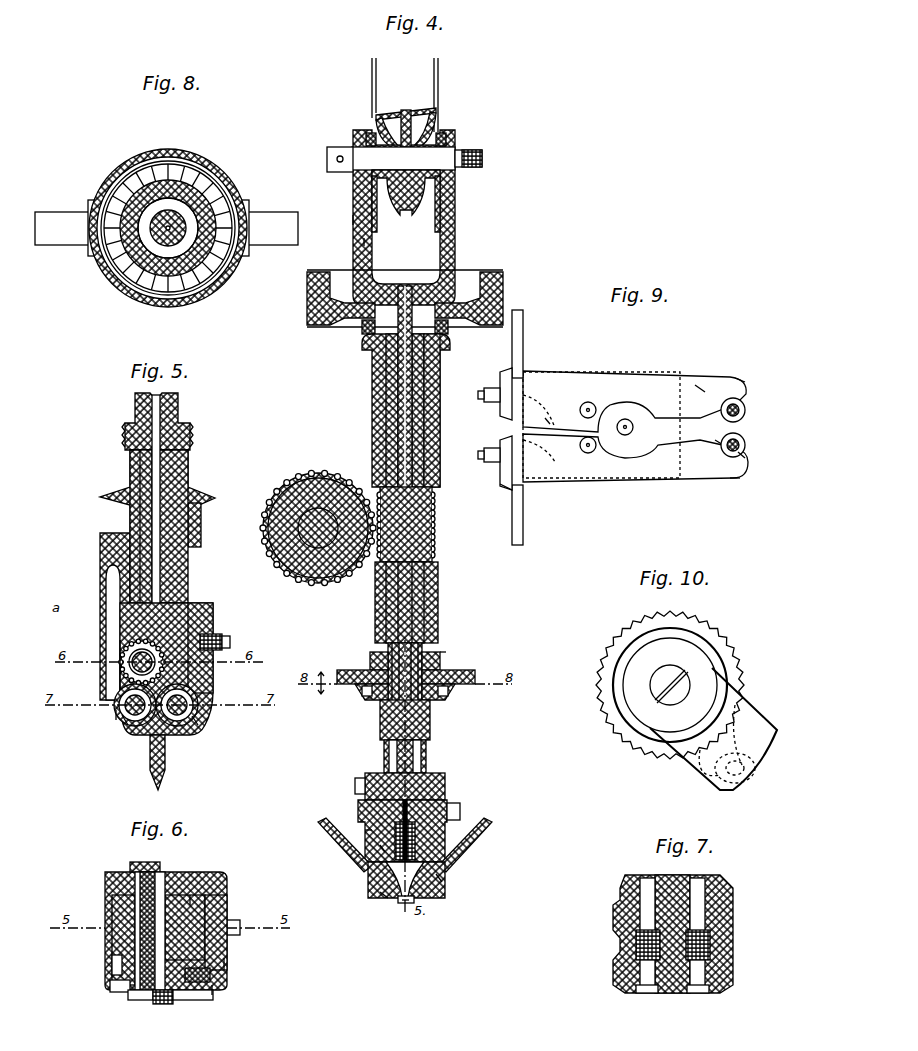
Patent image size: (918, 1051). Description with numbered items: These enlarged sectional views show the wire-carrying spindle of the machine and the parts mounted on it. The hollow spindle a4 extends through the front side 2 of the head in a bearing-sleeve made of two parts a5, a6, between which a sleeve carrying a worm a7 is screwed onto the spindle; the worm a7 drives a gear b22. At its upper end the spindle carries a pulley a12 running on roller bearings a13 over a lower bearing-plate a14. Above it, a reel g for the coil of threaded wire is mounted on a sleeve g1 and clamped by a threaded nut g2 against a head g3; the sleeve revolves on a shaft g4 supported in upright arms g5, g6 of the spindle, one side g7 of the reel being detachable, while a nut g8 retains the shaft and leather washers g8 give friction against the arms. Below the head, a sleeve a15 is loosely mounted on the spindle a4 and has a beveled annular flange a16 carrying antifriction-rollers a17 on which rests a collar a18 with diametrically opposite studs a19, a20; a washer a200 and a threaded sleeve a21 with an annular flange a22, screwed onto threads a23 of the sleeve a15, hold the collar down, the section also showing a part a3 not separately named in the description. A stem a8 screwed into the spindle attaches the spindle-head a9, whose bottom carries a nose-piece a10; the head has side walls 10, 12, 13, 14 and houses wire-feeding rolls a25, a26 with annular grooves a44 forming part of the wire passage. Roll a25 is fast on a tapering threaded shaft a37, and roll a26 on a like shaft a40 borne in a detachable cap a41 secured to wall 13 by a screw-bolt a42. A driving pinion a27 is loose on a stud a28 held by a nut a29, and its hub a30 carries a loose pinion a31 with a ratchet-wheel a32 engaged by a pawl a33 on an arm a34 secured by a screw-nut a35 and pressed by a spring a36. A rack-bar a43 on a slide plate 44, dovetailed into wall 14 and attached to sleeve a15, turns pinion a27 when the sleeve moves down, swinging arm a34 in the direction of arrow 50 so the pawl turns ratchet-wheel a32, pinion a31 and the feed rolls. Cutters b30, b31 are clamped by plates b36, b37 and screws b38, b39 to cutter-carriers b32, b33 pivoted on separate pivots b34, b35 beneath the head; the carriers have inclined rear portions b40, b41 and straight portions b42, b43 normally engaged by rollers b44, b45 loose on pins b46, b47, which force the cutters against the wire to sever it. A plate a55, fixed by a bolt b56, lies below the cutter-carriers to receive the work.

In FIG. 4, the cup g is at (408, 112).
In FIG. 4, the central column g1 is at (408, 132).
In FIG. 4, the boss g2 is at (370, 138).
In FIG. 4, the boss g3 is at (440, 136).
In FIG. 4, the cross bar g4 is at (365, 163).
In FIG. 4, the inner body g5 is at (440, 212).
In FIG. 4, the outer body g6 is at (354, 222).
In FIG. 4, the outer body wall g7 is at (366, 242).
In FIG. 4, the pin g8 is at (366, 138).
In FIG. 4, the flange a12 is at (500, 296).
In FIG. 4, the bushing a13 is at (364, 330).
In FIG. 4, the bushing a14 is at (447, 330).
In FIG. 4, the shaft casing 2 is at (440, 406).
In FIG. 4, the inner sleeve a4 is at (386, 428).
In FIG. 8, the inner sleeve a4 is at (190, 216).
In FIG. 4, the outer sleeve a5 is at (428, 442).
In FIG. 4, the threaded section a7 is at (434, 512).
In FIG. 4, the lower sleeve a6 is at (438, 597).
In FIG. 4, the gear b22 is at (326, 478).
In FIG. 4, the bushing a22 is at (372, 662).
In FIG. 4, the bushing a21 is at (438, 660).
In FIG. 4, the bushing part a200 is at (445, 655).
In FIG. 4, the flange plate a19 is at (470, 676).
In FIG. 8, the flange plate a19 is at (276, 214).
In FIG. 4, the flange plate a20 is at (338, 676).
In FIG. 8, the flange plate a20 is at (68, 214).
In FIG. 4, the hub a17 is at (448, 694).
In FIG. 8, the hub a17 is at (180, 162).
In FIG. 4, the hub a18 is at (365, 694).
In FIG. 8, the hub a18 is at (122, 176).
In FIG. 4, the collar a16 is at (370, 700).
In FIG. 5, the collar a16 is at (200, 494).
In FIG. 4, the hub body a15 is at (382, 724).
In FIG. 5, the hub body a15 is at (192, 527).
In FIG. 4, the rod a44 is at (389, 754).
In FIG. 7, the rod a44 is at (640, 932).
In FIG. 4, the rod a8 is at (418, 752).
In FIG. 5, the rod a8 is at (170, 540).
In FIG. 4, the block a9 is at (445, 778).
In FIG. 4, the tab a35 is at (356, 786).
In FIG. 6, the tab a35 is at (138, 1002).
In FIG. 4, the block a34 is at (360, 815).
In FIG. 6, the block a34 is at (170, 1005).
In FIG. 10, the block a34 is at (718, 672).
In FIG. 4, the roller a27 is at (420, 812).
In FIG. 5, the roller a27 is at (116, 688).
In FIG. 6, the roller a27 is at (195, 900).
In FIG. 4, the screw a29 is at (460, 812).
In FIG. 6, the screw a29 is at (133, 868).
In FIG. 4, the arm b31 is at (322, 826).
In FIG. 9, the arm b31 is at (525, 330).
In FIG. 4, the arm b30 is at (486, 826).
In FIG. 9, the arm b30 is at (525, 530).
In FIG. 4, the ratchet wheel a32 is at (372, 835).
In FIG. 6, the ratchet wheel a32 is at (115, 985).
In FIG. 10, the ratchet wheel a32 is at (598, 680).
In FIG. 4, the member a37 is at (385, 850).
In FIG. 5, the member a37 is at (118, 715).
In FIG. 7, the member a37 is at (640, 985).
In FIG. 4, the member a25 is at (368, 878).
In FIG. 5, the member a25 is at (126, 720).
In FIG. 7, the member a25 is at (640, 956).
In FIG. 4, the fitting b38 is at (440, 878).
In FIG. 9, the fitting b38 is at (486, 452).
In FIG. 4, the plate a55 is at (415, 900).
In FIG. 9, the plate a55 is at (548, 420).
In FIG. 4, the nut b39 is at (385, 897).
In FIG. 9, the nut b39 is at (486, 392).
In FIG. 4, the nozzle a10 is at (404, 902).
In FIG. 5, the nozzle a10 is at (152, 778).
In FIG. 8, the ring a3 is at (222, 190).
In FIG. 5, the threaded plug a23 is at (188, 446).
In FIG. 5, the housing 44 is at (104, 600).
In FIG. 5, the rod a43 is at (160, 600).
In FIG. 5, the block a41 is at (205, 610).
In FIG. 6, the block a41 is at (228, 964).
In FIG. 7, the block a41 is at (733, 905).
In FIG. 5, the screw a42 is at (228, 644).
In FIG. 5, the gear a30 is at (120, 667).
In FIG. 6, the gear a30 is at (115, 962).
In FIG. 5, the shaft a28 is at (122, 678).
In FIG. 6, the shaft a28 is at (160, 890).
In FIG. 5, the roller a40 is at (198, 710).
In FIG. 7, the roller a40 is at (705, 985).
In FIG. 5, the roller a26 is at (196, 722).
In FIG. 7, the roller a26 is at (710, 956).
In FIG. 6, the body 10 is at (175, 872).
In FIG. 6, the insert 14 is at (115, 952).
In FIG. 6, the block 13 is at (210, 920).
In FIG. 6, the screw a31 is at (230, 945).
In FIG. 6, the pawl a36 is at (210, 980).
In FIG. 10, the pawl a36 is at (752, 735).
In FIG. 6, the pawl a33 is at (200, 1000).
In FIG. 10, the pawl a33 is at (735, 735).
In FIG. 6, the plate 12 is at (218, 992).
In FIG. 9, the upper arm b33 is at (658, 378).
In FIG. 9, the lower arm b32 is at (645, 478).
In FIG. 9, the pivot b56 is at (630, 422).
In FIG. 9, the pin b35 is at (590, 402).
In FIG. 9, the pin b34 is at (588, 453).
In FIG. 9, the arm end b41 is at (700, 390).
In FIG. 9, the arm end b43 is at (740, 380).
In FIG. 9, the pivot b45 is at (745, 403).
In FIG. 9, the pin b47 is at (740, 410).
In FIG. 9, the arm end b40 is at (720, 444).
In FIG. 9, the pivot b46 is at (740, 445).
In FIG. 9, the arm end b44 is at (742, 455).
In FIG. 9, the arm end b42 is at (736, 480).
In FIG. 9, the fitting b37 is at (505, 375).
In FIG. 9, the fitting b36 is at (505, 486).
In FIG. 10, the rotation direction 50 is at (686, 728).